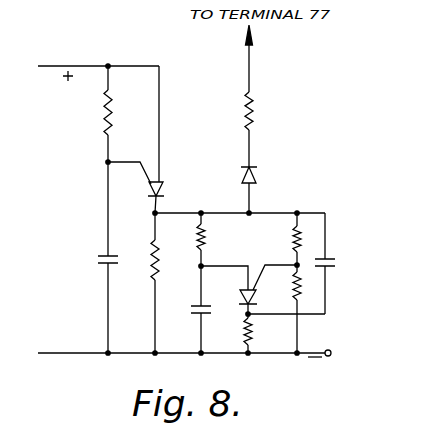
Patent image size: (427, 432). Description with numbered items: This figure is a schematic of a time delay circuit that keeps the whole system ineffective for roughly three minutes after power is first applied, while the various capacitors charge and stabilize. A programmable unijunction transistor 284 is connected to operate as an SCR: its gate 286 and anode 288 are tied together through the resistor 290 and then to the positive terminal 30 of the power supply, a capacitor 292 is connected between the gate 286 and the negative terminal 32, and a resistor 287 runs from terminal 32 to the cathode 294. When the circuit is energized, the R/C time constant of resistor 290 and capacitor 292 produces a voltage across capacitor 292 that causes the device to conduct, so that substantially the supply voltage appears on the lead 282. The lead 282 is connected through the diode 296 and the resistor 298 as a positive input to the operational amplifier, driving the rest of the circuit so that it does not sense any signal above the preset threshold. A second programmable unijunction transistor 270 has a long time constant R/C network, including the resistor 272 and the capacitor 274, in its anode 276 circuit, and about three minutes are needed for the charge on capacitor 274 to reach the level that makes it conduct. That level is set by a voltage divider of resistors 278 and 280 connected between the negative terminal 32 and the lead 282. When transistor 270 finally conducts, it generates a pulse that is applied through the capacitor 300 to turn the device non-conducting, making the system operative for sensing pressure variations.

The positive terminal 30 is at (47, 66).
The negative terminal 32 is at (194, 359).
The resistor 290 is at (103, 116).
The capacitor 292 is at (94, 258).
The anode 288 is at (160, 132).
The gate 286 is at (149, 162).
The programmable unijunction transistor 284 is at (163, 186).
The cathode 294 is at (152, 209).
The resistor 287 is at (150, 270).
The lead 282 is at (264, 212).
The resistor 298 is at (254, 106).
The diode 296 is at (258, 172).
The resistor 272 is at (203, 232).
The capacitor 274 is at (191, 310).
The anode 276 is at (220, 266).
The programmable unijunction transistor 270 is at (255, 302).
The resistor 278 is at (295, 236).
The resistor 280 is at (299, 296).
The capacitor 300 is at (336, 263).